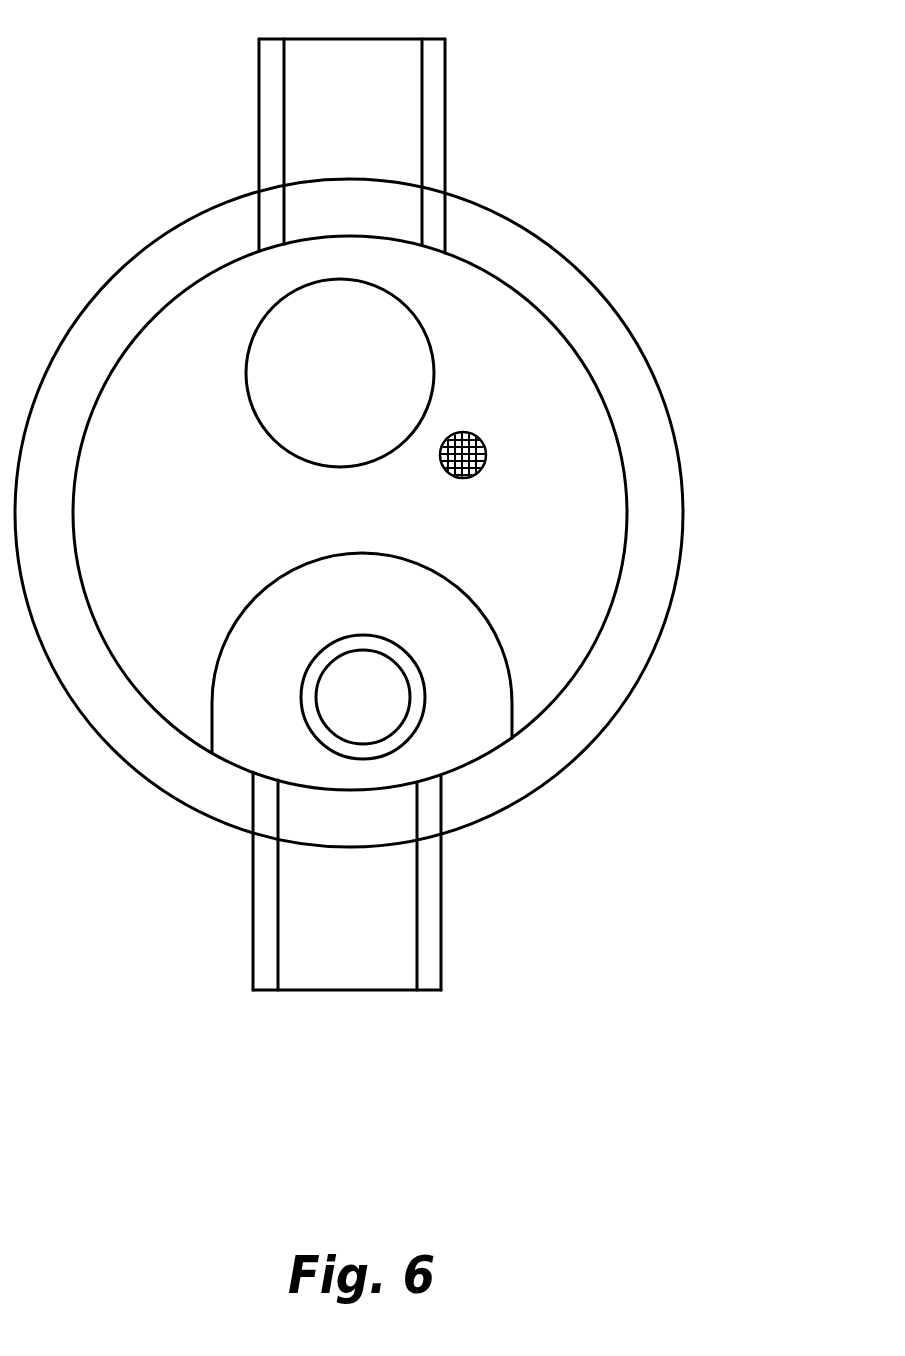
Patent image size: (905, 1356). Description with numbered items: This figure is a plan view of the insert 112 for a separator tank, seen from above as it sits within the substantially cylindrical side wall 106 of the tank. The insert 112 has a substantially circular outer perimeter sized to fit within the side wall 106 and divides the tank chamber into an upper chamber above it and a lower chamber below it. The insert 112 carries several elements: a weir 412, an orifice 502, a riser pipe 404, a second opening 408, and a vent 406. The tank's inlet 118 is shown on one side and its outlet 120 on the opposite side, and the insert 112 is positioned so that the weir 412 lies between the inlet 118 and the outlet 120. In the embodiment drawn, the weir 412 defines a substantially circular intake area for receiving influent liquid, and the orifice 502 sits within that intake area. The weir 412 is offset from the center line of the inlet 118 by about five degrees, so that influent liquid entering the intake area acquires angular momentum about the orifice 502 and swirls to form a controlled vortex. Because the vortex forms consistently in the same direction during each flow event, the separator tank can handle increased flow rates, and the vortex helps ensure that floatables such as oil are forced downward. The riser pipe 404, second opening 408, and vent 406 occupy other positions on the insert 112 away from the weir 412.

The side wall 106 is at (685, 552).
The insert 112 is at (625, 463).
The outlet 120 is at (446, 77).
The inlet 118 is at (442, 963).
The riser pipe 404 is at (248, 343).
The second opening 408 is at (388, 367).
The weir 412 is at (282, 573).
The orifice 502 is at (387, 692).
The vent 406 is at (488, 467).